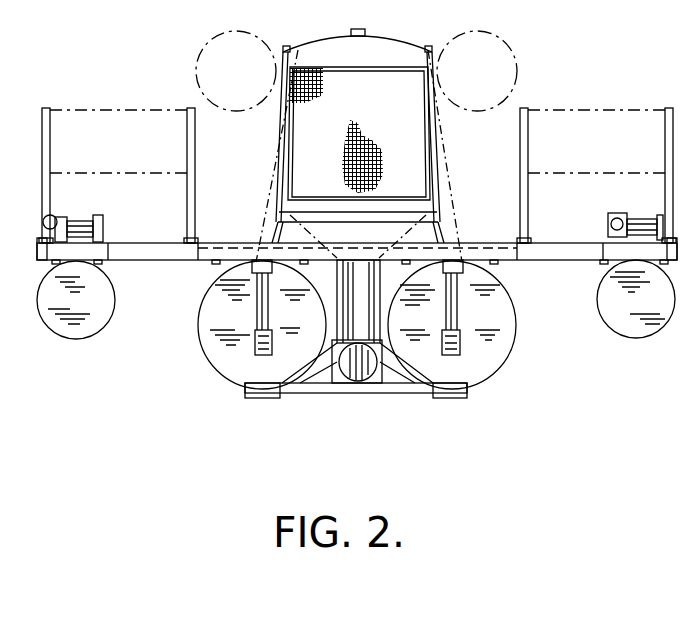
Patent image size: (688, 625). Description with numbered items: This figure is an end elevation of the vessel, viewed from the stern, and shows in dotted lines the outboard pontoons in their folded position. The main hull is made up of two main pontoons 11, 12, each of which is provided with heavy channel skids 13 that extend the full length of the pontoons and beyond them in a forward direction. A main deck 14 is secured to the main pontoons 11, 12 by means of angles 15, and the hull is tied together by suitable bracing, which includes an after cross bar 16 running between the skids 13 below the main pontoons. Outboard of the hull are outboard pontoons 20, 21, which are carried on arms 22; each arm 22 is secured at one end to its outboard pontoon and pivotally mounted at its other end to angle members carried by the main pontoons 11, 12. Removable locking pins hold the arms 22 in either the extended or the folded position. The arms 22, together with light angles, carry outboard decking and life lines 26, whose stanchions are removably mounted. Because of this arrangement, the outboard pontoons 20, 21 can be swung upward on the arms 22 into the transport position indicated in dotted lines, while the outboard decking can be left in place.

The main pontoon 11 is at (220, 343).
The main pontoon 12 is at (495, 357).
The channel skid 13 is at (258, 398).
The main deck 14 is at (444, 252).
The angle 15 is at (217, 265).
The after cross bar 16 is at (352, 388).
The outboard pontoon 20 is at (637, 332).
The outboard pontoon 21 is at (105, 316).
The arm 22 is at (161, 253).
The life line 26 is at (131, 75).